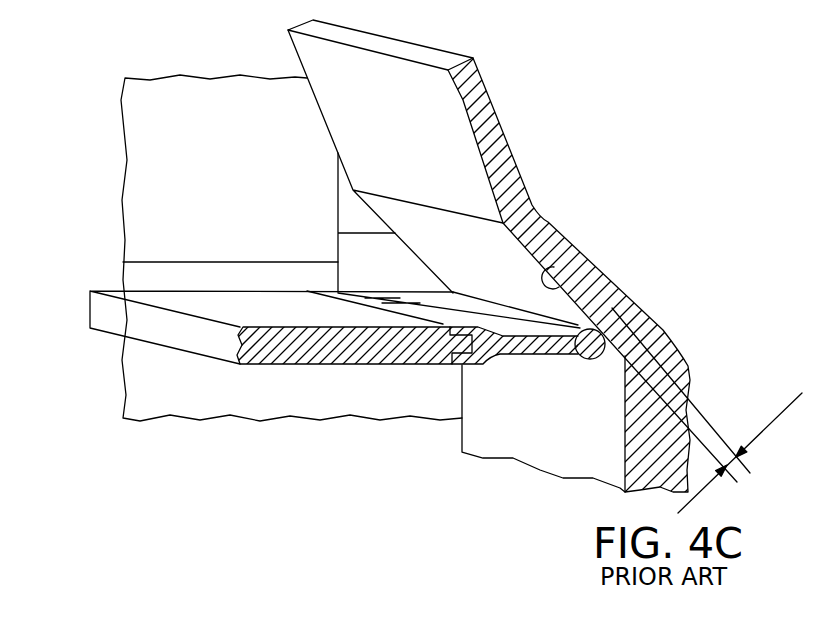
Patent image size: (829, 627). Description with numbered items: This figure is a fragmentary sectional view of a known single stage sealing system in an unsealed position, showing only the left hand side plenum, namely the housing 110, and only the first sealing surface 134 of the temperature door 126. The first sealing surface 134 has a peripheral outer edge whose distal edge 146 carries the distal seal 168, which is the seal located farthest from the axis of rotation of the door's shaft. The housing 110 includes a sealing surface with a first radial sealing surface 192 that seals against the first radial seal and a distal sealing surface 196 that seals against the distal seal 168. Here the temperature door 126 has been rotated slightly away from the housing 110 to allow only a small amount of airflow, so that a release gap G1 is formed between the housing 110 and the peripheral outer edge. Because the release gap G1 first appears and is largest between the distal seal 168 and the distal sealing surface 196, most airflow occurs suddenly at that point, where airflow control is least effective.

The housing 110 is at (243, 205).
The first radial sealing surface 192 is at (150, 273).
The temperature door 126 is at (208, 311).
The first sealing surface 134 is at (283, 350).
The distal edge 146 is at (460, 365).
The distal seal 168 is at (517, 345).
The distal sealing surface 196 is at (590, 268).
The release gap G1 is at (792, 404).